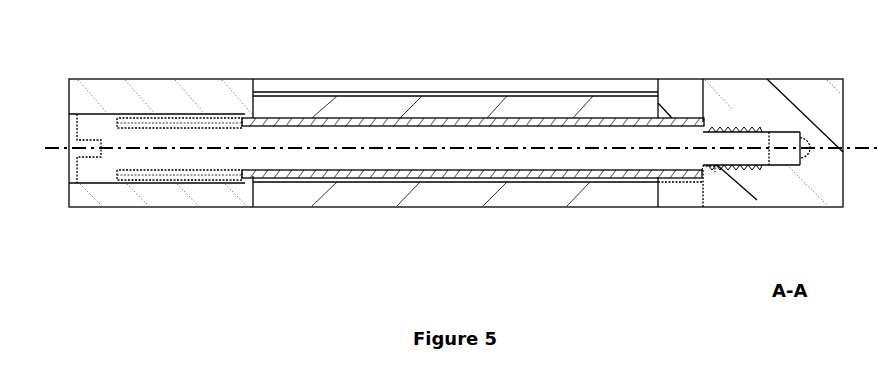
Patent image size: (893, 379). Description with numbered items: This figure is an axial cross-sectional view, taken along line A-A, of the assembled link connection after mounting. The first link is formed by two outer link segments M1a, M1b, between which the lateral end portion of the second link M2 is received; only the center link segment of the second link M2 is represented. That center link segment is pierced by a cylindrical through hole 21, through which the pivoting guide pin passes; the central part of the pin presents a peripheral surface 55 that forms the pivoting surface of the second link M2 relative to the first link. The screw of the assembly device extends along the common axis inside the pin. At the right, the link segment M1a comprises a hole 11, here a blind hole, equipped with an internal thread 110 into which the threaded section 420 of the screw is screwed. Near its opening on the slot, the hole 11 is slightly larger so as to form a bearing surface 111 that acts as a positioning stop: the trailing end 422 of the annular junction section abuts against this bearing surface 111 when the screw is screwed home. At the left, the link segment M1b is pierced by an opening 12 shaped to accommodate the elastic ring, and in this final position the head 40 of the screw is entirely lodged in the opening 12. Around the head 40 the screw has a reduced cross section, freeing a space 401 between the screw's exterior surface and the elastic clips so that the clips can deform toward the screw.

The outer link segment M1b is at (106, 98).
The space 401 is at (158, 130).
The peripheral surface 55 is at (452, 118).
The bearing surface 111 is at (703, 79).
The internal thread 110 is at (740, 132).
The outer link segment M1a is at (802, 95).
The opening 12 is at (74, 158).
The head 40 is at (94, 168).
The cylindrical through hole 21 is at (522, 182).
The second link M2 is at (600, 207).
The trailing end 422 is at (705, 165).
The threaded section 420 is at (740, 165).
The hole 11 is at (786, 152).